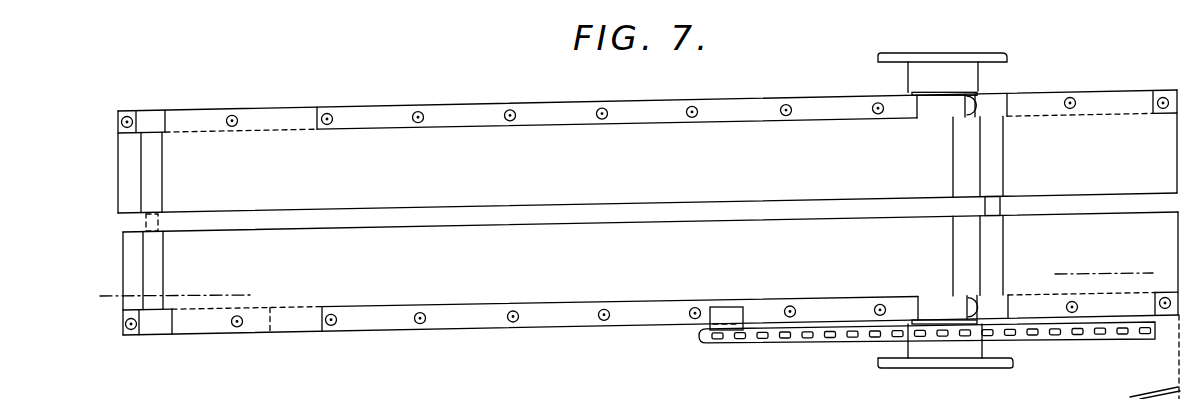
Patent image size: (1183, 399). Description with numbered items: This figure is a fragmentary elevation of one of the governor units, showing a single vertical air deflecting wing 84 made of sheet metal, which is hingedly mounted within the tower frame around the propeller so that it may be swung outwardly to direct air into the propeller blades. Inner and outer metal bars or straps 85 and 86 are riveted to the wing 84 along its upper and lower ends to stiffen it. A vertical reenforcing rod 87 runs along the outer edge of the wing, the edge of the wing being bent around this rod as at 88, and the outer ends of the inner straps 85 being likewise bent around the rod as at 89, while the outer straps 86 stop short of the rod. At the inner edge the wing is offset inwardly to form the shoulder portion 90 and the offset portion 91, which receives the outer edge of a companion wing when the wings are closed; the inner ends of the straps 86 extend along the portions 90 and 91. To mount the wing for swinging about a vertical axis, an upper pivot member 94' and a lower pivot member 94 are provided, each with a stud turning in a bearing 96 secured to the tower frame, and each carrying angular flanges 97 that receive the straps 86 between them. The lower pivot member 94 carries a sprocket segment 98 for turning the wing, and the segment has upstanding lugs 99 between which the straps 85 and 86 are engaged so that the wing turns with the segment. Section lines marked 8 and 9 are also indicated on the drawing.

The air deflecting wing 84 is at (1098, 130).
The inner bar or strap 85 is at (275, 336).
The outer bar or strap 86 is at (447, 110).
The reenforcing rod 87 is at (148, 222).
The bent outer edge portion 88 is at (152, 257).
The bent strap end 89 is at (157, 336).
The shoulder portion 90 is at (953, 178).
The offset portion 91 is at (970, 155).
The lower pivot member 94 is at (929, 294).
The upper pivot member 94' is at (912, 95).
The bearing 96 is at (968, 72).
The angular flange 97 is at (928, 112).
The sprocket segment 98 is at (790, 345).
The upstanding lug 99 is at (723, 310).
The section line 8- 8 is at (623, 284).
The section line 9- 9 is at (1055, 387).